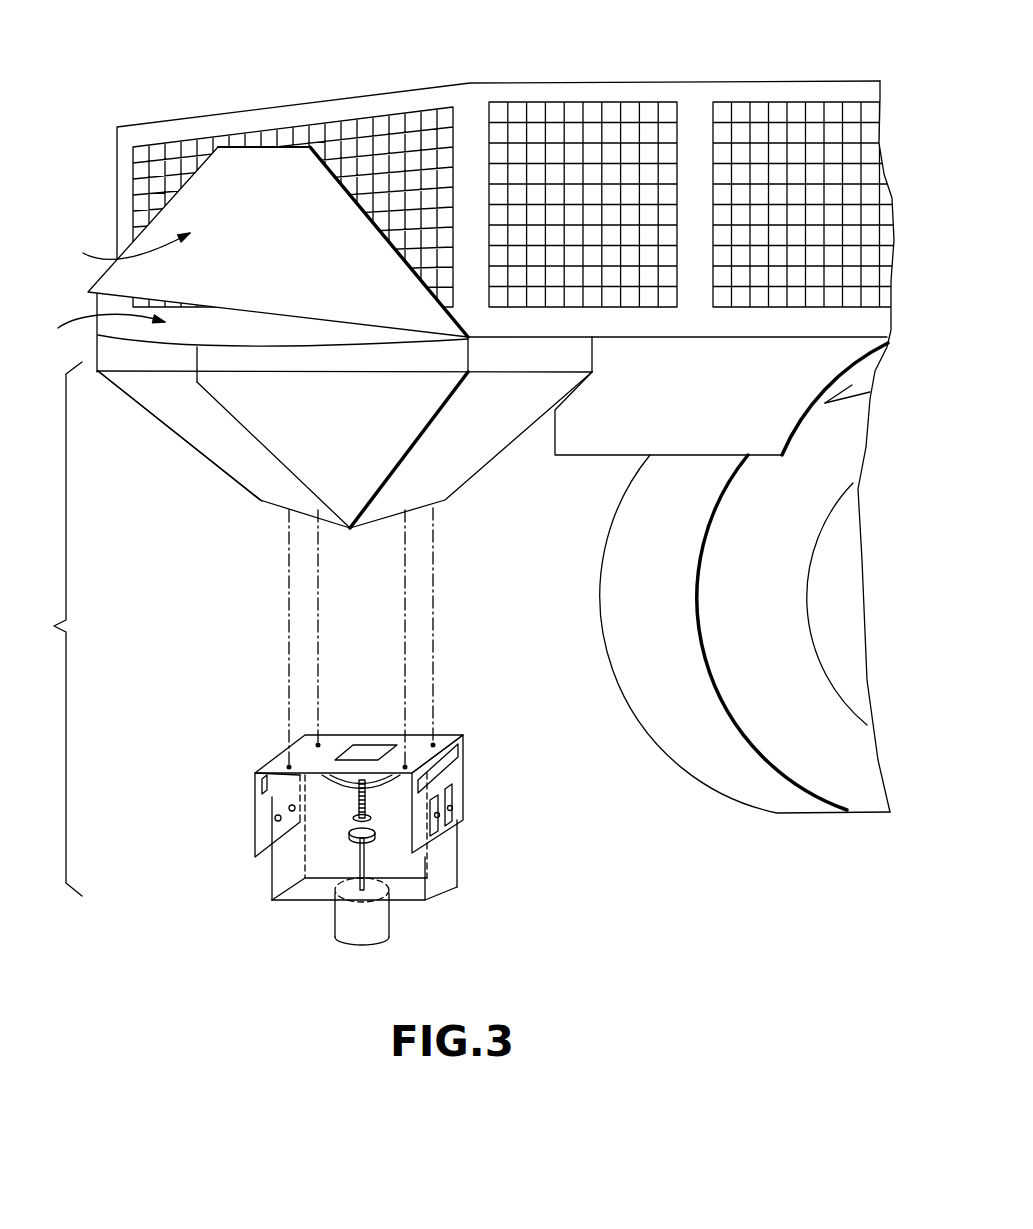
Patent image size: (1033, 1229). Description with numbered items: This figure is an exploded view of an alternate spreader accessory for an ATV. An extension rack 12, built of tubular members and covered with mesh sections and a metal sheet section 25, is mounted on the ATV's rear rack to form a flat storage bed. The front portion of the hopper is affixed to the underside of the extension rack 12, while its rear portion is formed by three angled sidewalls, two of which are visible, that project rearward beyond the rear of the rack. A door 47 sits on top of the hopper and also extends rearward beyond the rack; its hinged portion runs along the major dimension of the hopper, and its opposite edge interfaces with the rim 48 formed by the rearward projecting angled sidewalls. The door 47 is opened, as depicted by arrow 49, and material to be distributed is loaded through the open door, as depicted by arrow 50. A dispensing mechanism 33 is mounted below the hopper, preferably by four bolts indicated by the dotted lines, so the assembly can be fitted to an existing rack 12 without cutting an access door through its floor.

The extension rack 12 is at (482, 317).
The metal sheet section 25 is at (640, 337).
The dispensing mechanism 33 is at (470, 745).
The door 47 is at (302, 257).
The rim 48 is at (170, 347).
The arrow 49 is at (121, 248).
The arrow 50 is at (96, 331).